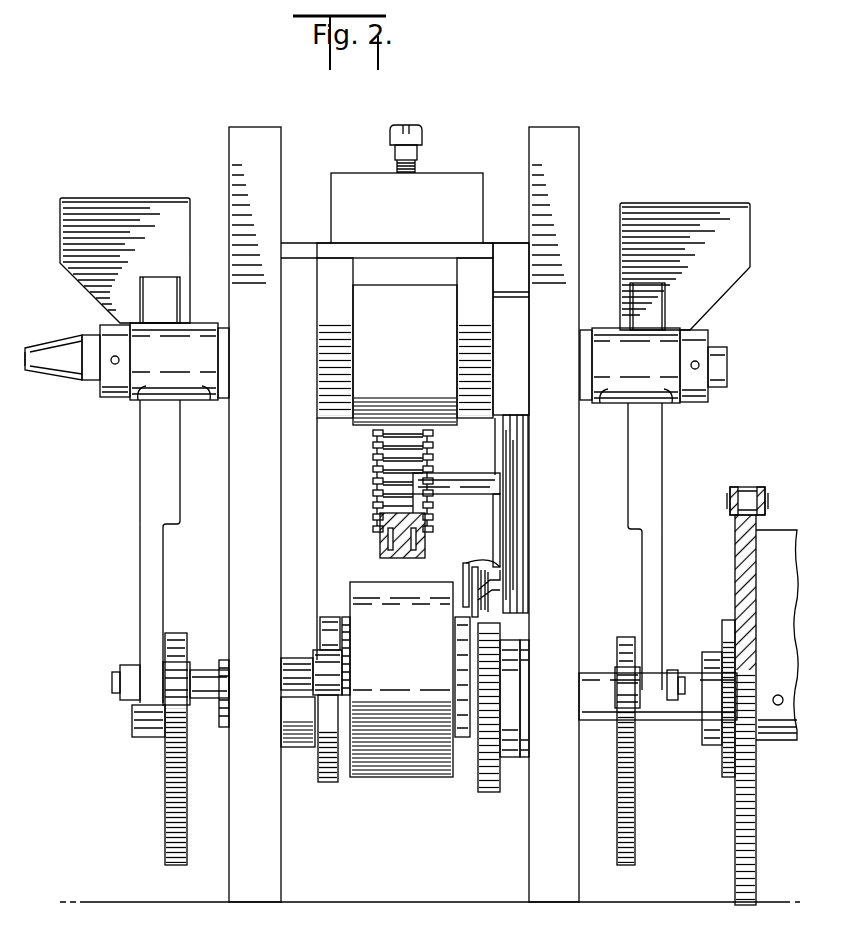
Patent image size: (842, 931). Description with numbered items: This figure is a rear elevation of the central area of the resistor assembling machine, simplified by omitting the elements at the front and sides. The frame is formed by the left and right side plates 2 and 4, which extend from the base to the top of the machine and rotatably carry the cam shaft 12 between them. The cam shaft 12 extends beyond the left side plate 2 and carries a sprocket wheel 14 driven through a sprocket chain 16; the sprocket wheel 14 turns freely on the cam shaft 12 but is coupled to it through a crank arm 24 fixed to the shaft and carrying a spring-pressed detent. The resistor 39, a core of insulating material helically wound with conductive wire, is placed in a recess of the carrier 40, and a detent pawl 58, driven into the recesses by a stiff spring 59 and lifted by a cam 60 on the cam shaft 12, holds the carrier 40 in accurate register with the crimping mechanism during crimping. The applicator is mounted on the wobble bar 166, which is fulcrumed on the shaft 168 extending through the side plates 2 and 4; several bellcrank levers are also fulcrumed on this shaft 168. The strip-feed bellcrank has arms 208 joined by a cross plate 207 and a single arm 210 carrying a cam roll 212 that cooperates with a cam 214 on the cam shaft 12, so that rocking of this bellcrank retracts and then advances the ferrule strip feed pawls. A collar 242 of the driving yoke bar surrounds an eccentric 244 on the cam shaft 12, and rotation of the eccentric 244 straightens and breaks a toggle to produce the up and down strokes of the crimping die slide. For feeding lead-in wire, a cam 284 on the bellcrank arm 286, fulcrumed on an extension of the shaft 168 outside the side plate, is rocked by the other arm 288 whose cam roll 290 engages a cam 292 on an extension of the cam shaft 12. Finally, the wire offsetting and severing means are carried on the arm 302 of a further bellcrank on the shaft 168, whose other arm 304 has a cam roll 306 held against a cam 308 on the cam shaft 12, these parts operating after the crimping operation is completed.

The left side plate 2 is at (575, 146).
The right side plate 4 is at (243, 142).
The cam shaft 12 is at (205, 710).
The sprocket wheel 14 is at (745, 847).
The sprocket chain 16 is at (730, 492).
The crank arm 24 is at (778, 540).
The resistor 39 is at (435, 450).
The carrier 40 is at (405, 537).
The detent pawl 58 is at (417, 504).
The stiff spring 59 is at (478, 567).
The cam 60 is at (462, 690).
The wobble bar 166 is at (400, 294).
The shaft 168 is at (56, 352).
The cross plate 207 is at (353, 250).
The bellcrank arm 208 is at (292, 247).
The bellcrank arm 210 is at (290, 540).
The cam roll 212 is at (323, 662).
The cam 214 is at (328, 770).
The collar 242 is at (385, 745).
The eccentric 244 is at (344, 620).
The cam 284 is at (83, 222).
The bellcrank arm 286 is at (171, 292).
The bellcrank arm 288 is at (146, 525).
The cam roll 290 is at (180, 665).
The cam 292 is at (175, 786).
The bellcrank arm 302 is at (327, 330).
The bellcrank arm 304 is at (520, 448).
The cam roll 306 is at (505, 696).
The cam 308 is at (488, 772).